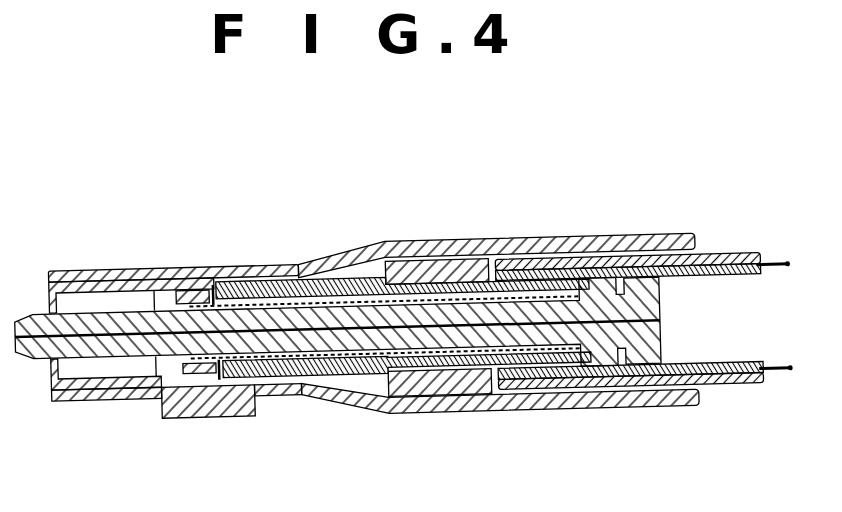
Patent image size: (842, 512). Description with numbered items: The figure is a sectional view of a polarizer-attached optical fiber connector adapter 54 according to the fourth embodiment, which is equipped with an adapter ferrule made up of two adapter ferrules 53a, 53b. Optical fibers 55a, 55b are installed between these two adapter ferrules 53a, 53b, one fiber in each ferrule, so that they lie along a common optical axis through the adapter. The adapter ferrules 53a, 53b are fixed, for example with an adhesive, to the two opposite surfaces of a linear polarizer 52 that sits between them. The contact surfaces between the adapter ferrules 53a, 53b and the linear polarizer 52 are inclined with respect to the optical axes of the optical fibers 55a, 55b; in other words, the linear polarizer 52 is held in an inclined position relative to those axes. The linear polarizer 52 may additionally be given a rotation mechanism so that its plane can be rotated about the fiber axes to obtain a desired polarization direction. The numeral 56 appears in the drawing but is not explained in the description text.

The linear polarizer 52 is at (252, 340).
The adapter ferrule 53a is at (174, 358).
The adapter ferrule 53b is at (361, 406).
The polarizer-attached optical fiber connector adapter 54 is at (368, 263).
The optical fiber 55a is at (90, 388).
The optical fiber 55b is at (427, 373).
The outer tube 56 is at (230, 278).